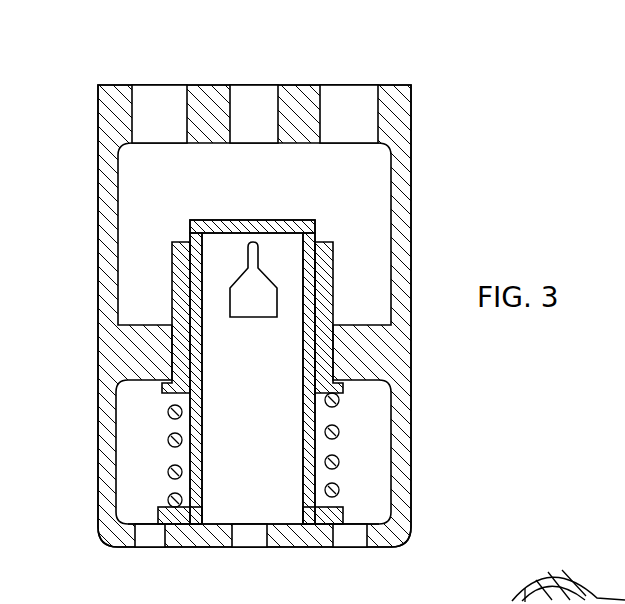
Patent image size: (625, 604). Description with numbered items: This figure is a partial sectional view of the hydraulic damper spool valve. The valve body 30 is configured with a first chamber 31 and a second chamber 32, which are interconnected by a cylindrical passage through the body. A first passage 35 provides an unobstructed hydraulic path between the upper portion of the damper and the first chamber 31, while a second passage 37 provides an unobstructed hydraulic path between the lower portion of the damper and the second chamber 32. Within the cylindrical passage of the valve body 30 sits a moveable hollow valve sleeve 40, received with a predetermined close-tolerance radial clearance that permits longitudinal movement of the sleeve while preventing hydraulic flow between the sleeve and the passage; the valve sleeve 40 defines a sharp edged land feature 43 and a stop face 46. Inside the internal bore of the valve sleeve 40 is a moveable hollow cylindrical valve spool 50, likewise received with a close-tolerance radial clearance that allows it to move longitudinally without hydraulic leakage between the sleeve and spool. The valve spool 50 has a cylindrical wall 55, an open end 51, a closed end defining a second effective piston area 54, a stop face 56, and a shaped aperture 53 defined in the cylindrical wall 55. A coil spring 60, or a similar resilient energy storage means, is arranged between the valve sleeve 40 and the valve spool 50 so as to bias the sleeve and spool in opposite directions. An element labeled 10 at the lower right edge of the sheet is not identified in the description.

The valve body 30 is at (115, 58).
The first chamber 31 is at (382, 155).
The second chamber 32 is at (373, 502).
The first passage 35 is at (157, 108).
The second passage 37 is at (152, 537).
The valve sleeve 40 is at (181, 302).
The sharp edged land feature 43 is at (284, 244).
The stop face 46 is at (343, 366).
The valve spool 50 is at (170, 453).
The open end 51 is at (318, 492).
The shaped aperture 53 is at (250, 280).
The second effective piston area 54 is at (320, 218).
The cylindrical wall 55 is at (350, 440).
The stop face 56 is at (307, 527).
The coil spring 60 is at (168, 437).
The adjacent component 10 is at (507, 602).